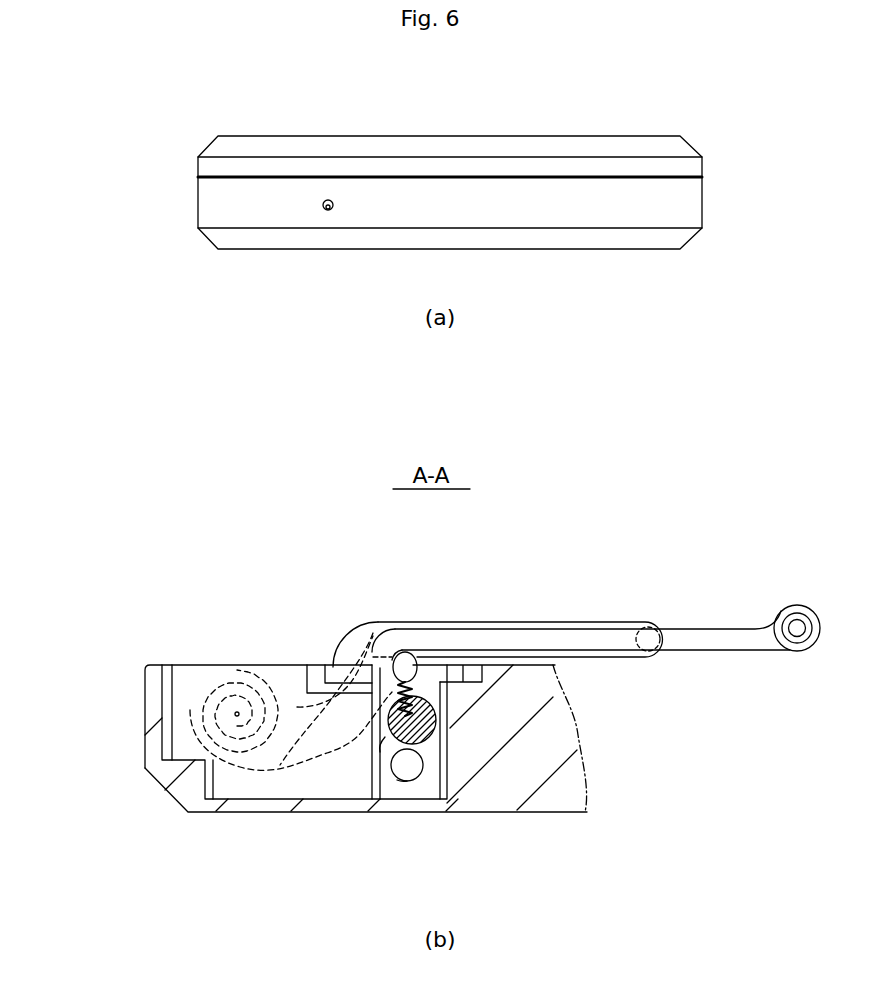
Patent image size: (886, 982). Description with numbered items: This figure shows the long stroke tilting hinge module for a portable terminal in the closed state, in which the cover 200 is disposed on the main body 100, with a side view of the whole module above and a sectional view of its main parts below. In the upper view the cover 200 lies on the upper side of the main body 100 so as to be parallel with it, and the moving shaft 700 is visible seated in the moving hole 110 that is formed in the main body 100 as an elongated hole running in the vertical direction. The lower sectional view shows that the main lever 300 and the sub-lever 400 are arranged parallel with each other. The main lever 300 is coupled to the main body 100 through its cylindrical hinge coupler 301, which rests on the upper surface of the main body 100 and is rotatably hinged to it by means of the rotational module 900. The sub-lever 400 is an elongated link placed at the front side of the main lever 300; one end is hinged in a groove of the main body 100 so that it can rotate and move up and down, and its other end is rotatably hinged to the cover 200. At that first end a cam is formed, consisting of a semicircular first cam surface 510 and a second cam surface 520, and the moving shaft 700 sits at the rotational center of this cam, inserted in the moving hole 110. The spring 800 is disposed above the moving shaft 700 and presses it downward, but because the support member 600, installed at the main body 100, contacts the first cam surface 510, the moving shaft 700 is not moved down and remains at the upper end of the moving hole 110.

The main body 100 is at (232, 204).
The moving hole 110 is at (328, 213).
The cover 200 is at (460, 147).
The main lever 300 is at (360, 640).
The hinge coupler 301 is at (262, 665).
The sub-lever 400 is at (712, 640).
The first cam surface 510 is at (428, 720).
The second cam surface 520 is at (397, 780).
The support member 600 is at (410, 773).
The moving shaft 700 is at (324, 207).
The spring 800 is at (413, 667).
The rotational module 900 is at (240, 713).